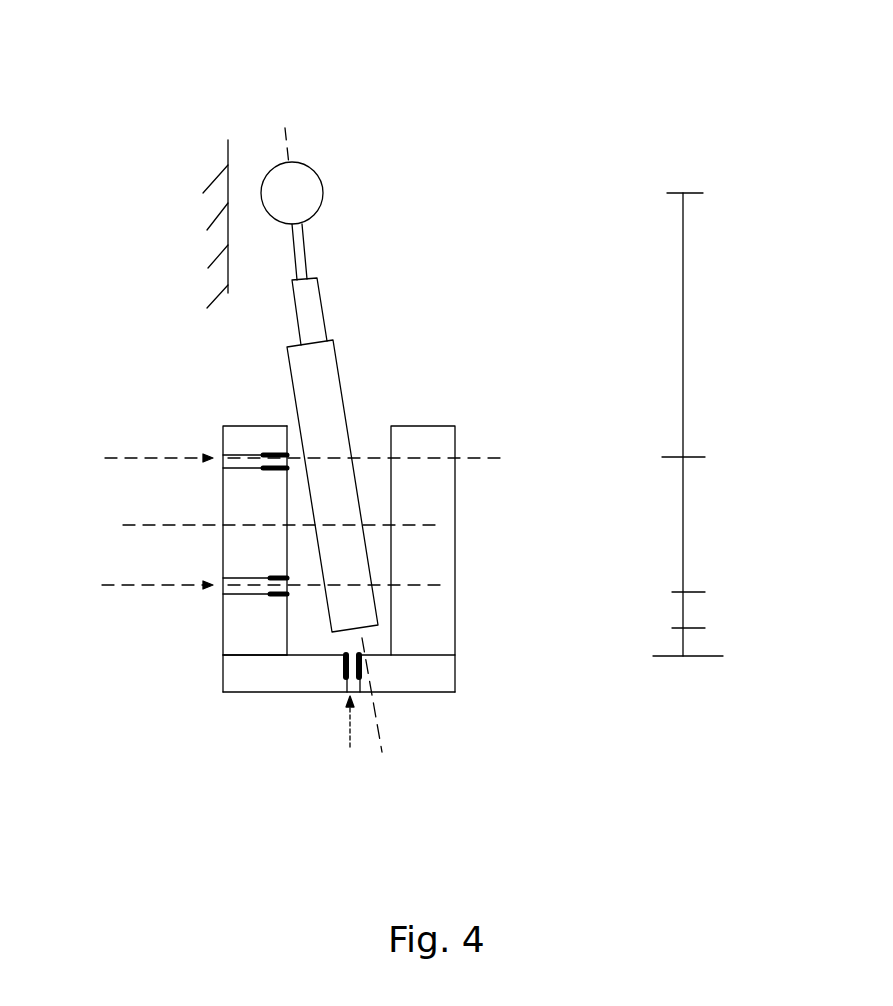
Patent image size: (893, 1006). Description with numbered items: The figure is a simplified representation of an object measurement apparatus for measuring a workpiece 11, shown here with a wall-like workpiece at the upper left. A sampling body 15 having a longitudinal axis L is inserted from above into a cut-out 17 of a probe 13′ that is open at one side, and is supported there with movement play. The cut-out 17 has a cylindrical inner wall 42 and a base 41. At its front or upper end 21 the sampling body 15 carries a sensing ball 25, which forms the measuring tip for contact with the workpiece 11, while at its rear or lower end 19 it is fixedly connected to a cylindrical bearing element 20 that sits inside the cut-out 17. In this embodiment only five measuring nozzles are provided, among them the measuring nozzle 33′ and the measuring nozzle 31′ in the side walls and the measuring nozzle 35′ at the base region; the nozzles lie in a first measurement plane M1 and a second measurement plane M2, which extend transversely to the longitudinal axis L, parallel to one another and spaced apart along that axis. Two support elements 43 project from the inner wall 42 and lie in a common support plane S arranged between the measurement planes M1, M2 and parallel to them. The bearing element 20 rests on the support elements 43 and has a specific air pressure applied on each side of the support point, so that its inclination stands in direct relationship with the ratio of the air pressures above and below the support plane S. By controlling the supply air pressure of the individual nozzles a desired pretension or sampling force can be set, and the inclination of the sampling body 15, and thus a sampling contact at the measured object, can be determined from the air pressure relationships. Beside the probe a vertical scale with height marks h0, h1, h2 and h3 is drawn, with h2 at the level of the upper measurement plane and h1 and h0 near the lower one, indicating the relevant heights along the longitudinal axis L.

The workpiece 11 is at (230, 166).
The longitudinal axis L is at (284, 114).
The sensing ball 25 is at (297, 187).
The front or upper end 21 is at (336, 227).
The sampling body 15 is at (305, 300).
The bearing element 20 is at (320, 397).
The cut-out 17 is at (362, 431).
The probe 13′ is at (257, 617).
The rear or lower end 19 is at (310, 612).
The measuring nozzle 33′ is at (236, 466).
The measuring nozzle 31′ is at (242, 583).
The measuring nozzle 35′ is at (348, 677).
The base 41 is at (321, 649).
The cylindrical inner wall 42 is at (383, 464).
The support elements 43 is at (362, 527).
The first measurement plane M1 is at (495, 583).
The second measurement plane M2 is at (142, 460).
The support plane S is at (142, 527).
The height h0 is at (713, 630).
The height h1 is at (713, 593).
The height h2 is at (708, 459).
The height h3 is at (711, 194).